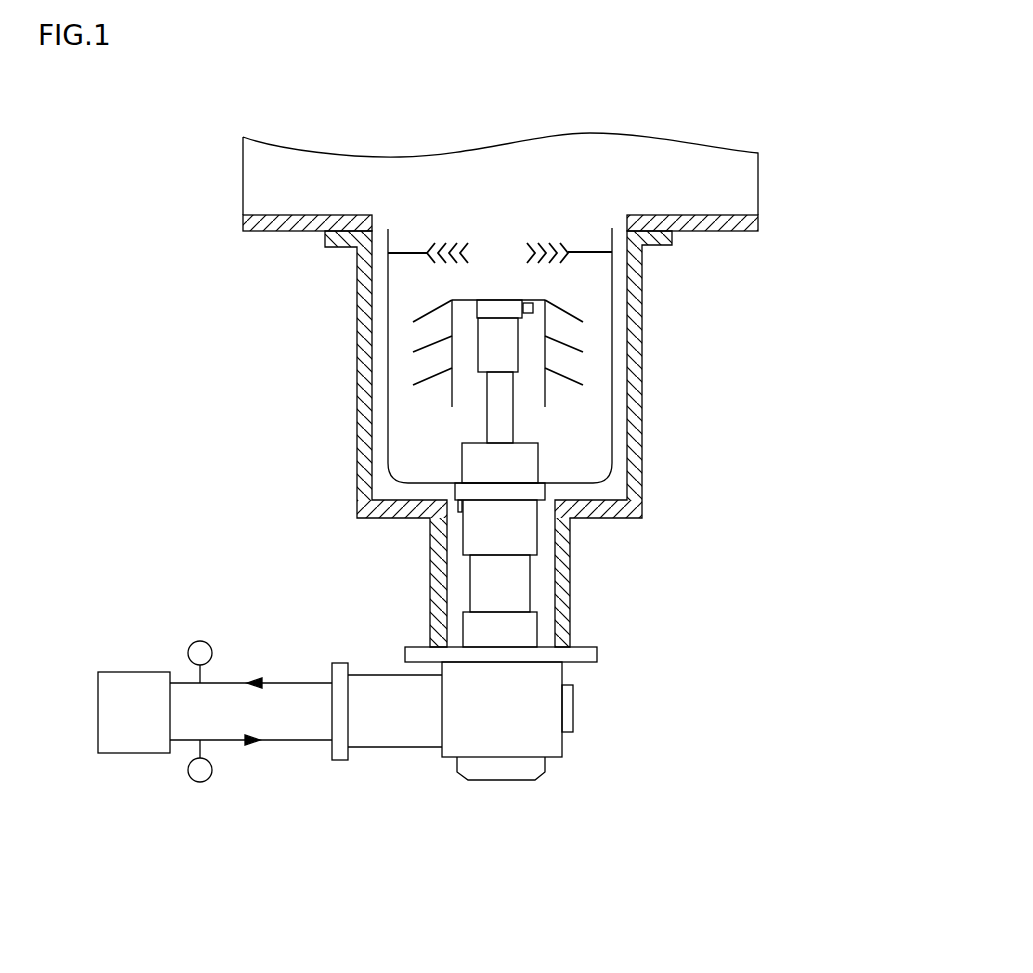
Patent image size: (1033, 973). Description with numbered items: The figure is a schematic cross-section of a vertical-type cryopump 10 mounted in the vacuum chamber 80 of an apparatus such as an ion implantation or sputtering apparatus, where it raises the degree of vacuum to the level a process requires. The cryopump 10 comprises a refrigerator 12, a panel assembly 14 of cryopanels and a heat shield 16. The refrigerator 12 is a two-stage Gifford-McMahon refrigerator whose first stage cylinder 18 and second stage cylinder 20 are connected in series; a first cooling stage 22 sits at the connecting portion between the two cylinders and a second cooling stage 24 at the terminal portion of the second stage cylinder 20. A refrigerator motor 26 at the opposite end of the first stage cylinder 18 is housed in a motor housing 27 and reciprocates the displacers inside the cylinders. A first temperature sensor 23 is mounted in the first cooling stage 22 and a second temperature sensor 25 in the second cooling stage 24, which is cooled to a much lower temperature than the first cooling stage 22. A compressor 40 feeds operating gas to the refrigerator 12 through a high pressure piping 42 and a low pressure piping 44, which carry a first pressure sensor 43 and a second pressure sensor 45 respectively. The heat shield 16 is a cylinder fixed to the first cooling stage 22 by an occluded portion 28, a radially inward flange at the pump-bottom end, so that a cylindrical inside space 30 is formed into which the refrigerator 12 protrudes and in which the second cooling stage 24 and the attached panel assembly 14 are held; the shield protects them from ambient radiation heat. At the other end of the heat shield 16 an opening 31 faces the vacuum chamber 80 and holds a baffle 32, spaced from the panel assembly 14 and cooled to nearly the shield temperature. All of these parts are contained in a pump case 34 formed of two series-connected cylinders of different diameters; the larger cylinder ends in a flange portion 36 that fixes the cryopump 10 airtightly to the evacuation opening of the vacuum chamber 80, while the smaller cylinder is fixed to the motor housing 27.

The cryopump 10 is at (650, 280).
The refrigerator 12 is at (562, 745).
The panel assembly 14 is at (588, 365).
The heat shield 16 is at (612, 473).
The first stage cylinder 18 is at (502, 587).
The second stage cylinder 20 is at (500, 430).
The first cooling stage 22 is at (560, 490).
The first temperature sensor 23 is at (460, 512).
The second cooling stage 24 is at (475, 312).
The second temperature sensor 25 is at (533, 313).
The refrigerator motor 26 is at (543, 707).
The motor housing 27 is at (413, 747).
The occluded portion 28 is at (432, 482).
The inside space 30 is at (412, 370).
The opening 31 is at (407, 245).
The baffle 32 is at (545, 238).
The pump case 34 is at (365, 428).
The flange portion 36 is at (672, 238).
The compressor 40 is at (135, 755).
The high pressure piping 42 is at (280, 742).
The first pressure sensor 43 is at (205, 783).
The low pressure piping 44 is at (280, 685).
The second pressure sensor 45 is at (212, 652).
The vacuum chamber 80 is at (678, 158).